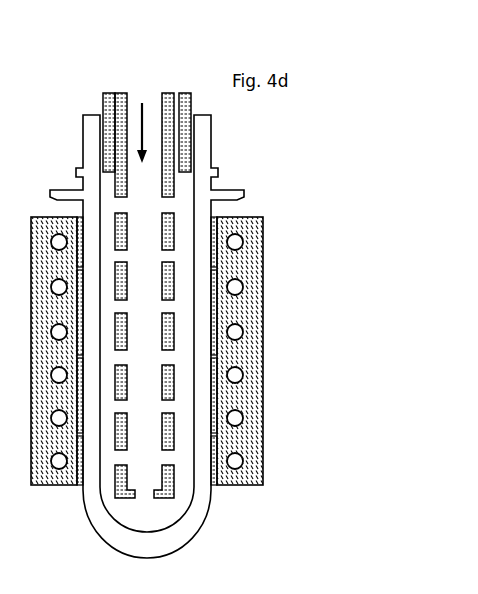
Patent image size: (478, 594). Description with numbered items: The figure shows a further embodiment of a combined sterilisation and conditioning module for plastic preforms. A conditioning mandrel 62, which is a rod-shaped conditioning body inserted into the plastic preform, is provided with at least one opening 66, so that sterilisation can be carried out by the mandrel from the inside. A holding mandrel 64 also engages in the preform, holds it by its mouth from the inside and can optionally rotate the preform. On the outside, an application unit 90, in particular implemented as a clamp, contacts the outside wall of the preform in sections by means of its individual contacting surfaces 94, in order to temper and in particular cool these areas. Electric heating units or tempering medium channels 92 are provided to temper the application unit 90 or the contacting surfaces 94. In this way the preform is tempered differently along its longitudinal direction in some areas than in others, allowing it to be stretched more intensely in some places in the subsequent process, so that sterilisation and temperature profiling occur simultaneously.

The conditioning mandrel 62 is at (172, 117).
The holding mandrel 64 is at (188, 102).
The opening 66 is at (172, 354).
The application unit 90 is at (250, 228).
The tempering medium channels 92 is at (243, 287).
The contacting surfaces 94 is at (210, 438).